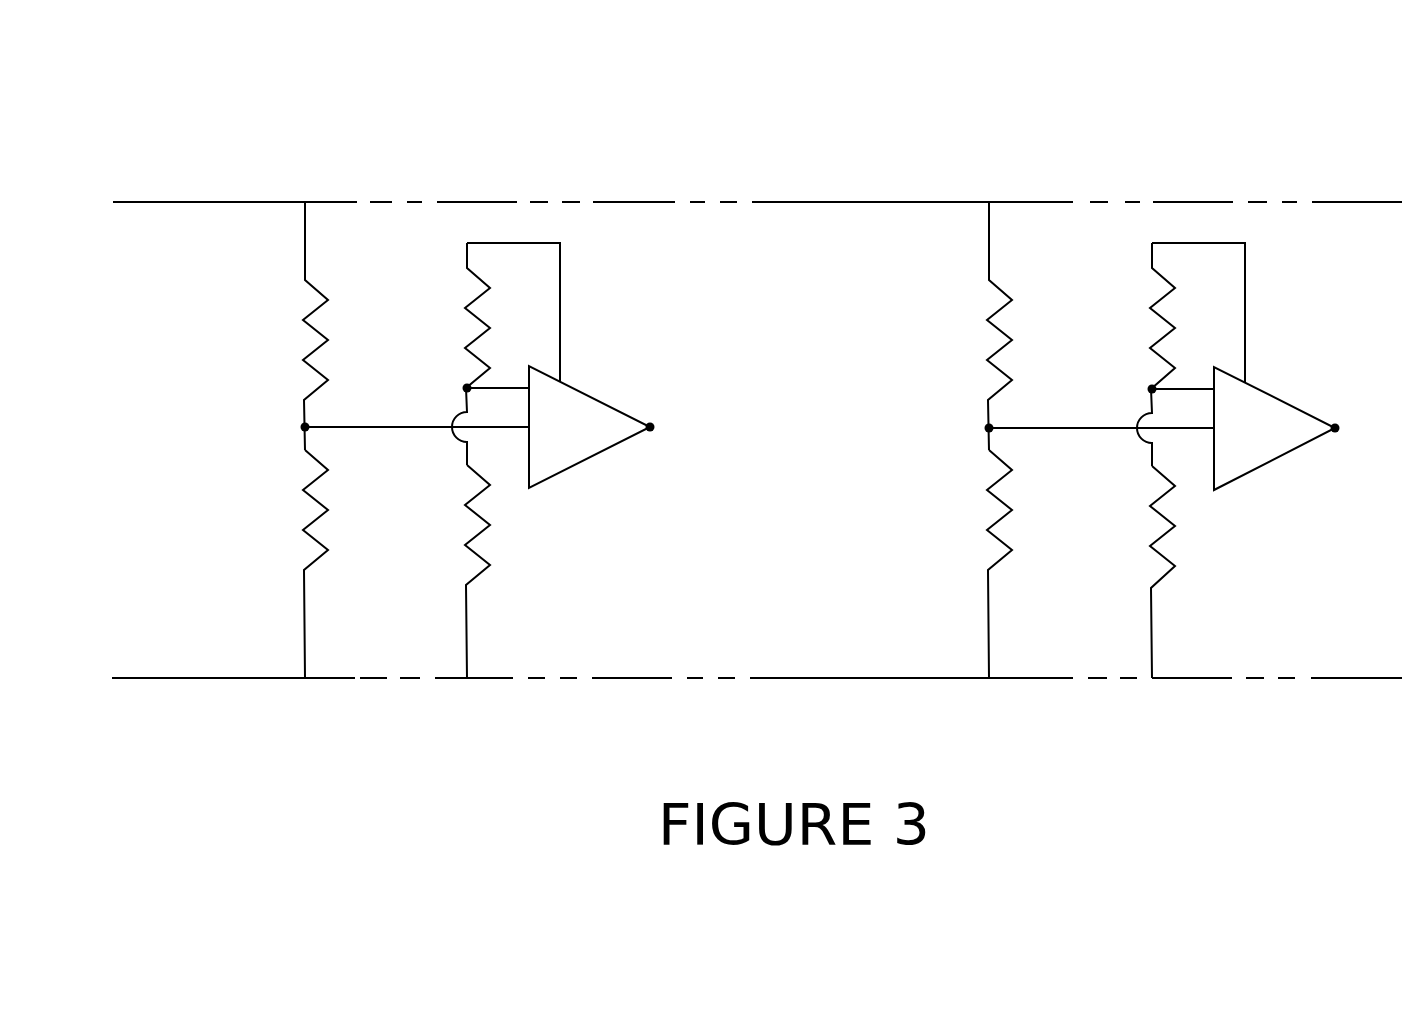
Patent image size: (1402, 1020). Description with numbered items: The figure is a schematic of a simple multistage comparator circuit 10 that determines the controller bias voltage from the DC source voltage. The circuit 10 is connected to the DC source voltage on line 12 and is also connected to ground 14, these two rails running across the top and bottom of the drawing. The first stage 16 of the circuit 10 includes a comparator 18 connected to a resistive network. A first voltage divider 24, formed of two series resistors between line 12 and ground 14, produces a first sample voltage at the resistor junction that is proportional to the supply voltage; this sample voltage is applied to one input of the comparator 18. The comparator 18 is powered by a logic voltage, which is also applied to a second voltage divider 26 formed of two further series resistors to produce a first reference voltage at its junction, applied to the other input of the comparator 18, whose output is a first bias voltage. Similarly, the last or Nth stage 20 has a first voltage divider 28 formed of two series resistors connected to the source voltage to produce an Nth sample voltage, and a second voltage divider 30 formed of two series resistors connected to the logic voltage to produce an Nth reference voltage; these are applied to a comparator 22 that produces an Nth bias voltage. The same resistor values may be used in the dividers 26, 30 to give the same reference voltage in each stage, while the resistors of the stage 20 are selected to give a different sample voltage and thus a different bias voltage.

The multistage comparator circuit 10 is at (1217, 115).
The line 12 is at (258, 198).
The ground 14 is at (245, 680).
The first stage 16 is at (530, 450).
The comparator 18 is at (593, 441).
The last (Nth) stage 20 is at (1215, 450).
The comparator 22 is at (1277, 442).
The first voltage divider 24 is at (295, 545).
The second voltage divider 26 is at (460, 552).
The first voltage divider 28 is at (980, 559).
The second voltage divider 30 is at (1150, 565).